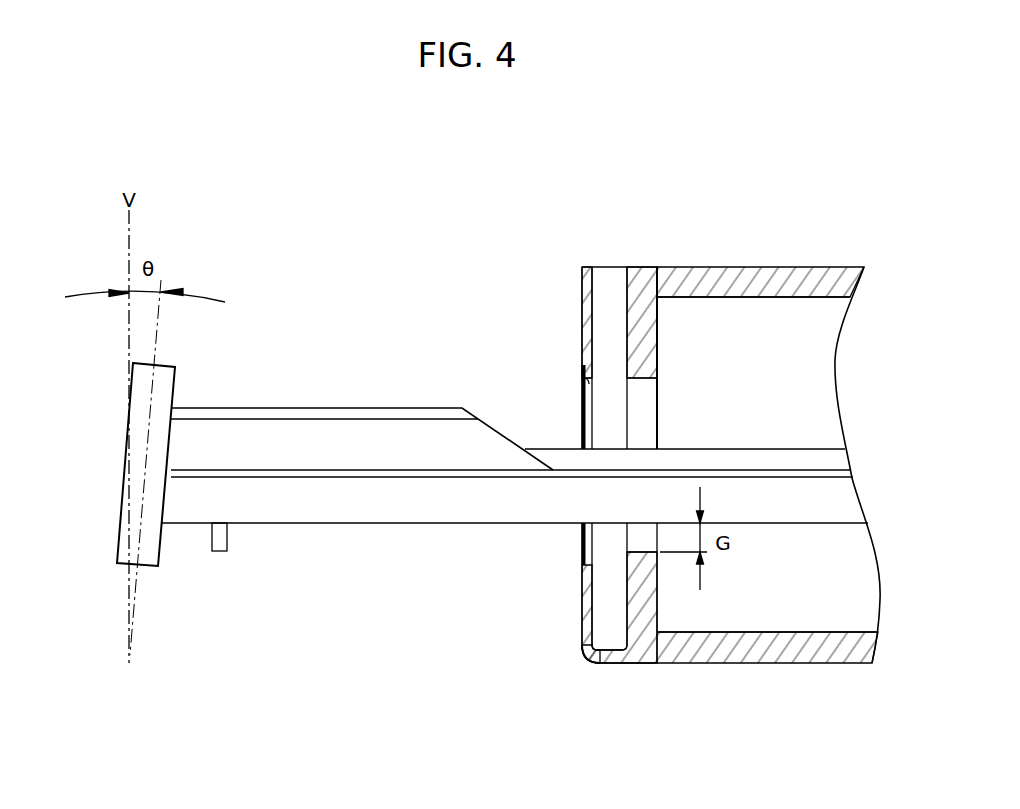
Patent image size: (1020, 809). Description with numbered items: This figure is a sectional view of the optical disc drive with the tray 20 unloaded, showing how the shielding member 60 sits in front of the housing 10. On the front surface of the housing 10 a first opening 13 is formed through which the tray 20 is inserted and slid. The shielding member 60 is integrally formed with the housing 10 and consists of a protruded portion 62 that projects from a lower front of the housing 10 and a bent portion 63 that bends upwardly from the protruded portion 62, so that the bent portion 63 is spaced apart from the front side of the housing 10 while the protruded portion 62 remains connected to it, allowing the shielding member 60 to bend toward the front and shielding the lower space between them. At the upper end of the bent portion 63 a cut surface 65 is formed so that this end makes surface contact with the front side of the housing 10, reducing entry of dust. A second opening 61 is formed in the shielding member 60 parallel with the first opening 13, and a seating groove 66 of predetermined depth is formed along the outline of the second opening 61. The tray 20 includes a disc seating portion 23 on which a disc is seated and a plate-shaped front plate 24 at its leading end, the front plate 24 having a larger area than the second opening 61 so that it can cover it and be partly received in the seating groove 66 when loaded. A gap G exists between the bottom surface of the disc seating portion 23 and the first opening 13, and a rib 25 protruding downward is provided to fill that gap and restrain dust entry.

The housing 10 is at (782, 262).
The first opening 13 is at (645, 380).
The tray 20 is at (337, 398).
The disc seating portion 23 is at (337, 498).
The front plate 24 is at (120, 502).
The rib 25 is at (214, 551).
The shielding member 60 is at (582, 293).
The second opening 61 is at (580, 393).
The protruded portion 62 is at (605, 658).
The bent portion 63 is at (587, 627).
The cut surface 65 is at (592, 273).
The seating groove 66 is at (582, 560).